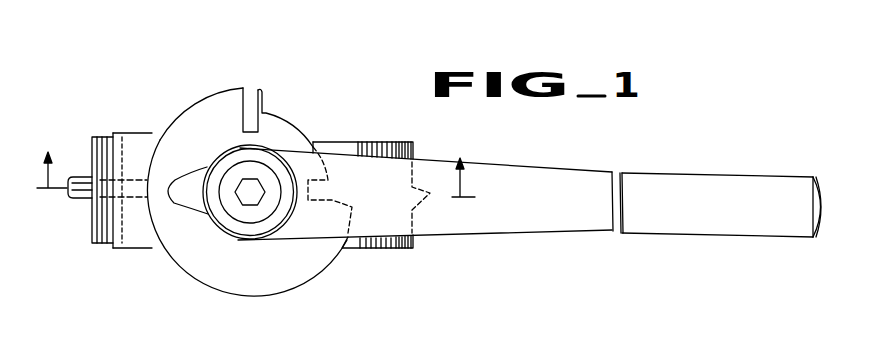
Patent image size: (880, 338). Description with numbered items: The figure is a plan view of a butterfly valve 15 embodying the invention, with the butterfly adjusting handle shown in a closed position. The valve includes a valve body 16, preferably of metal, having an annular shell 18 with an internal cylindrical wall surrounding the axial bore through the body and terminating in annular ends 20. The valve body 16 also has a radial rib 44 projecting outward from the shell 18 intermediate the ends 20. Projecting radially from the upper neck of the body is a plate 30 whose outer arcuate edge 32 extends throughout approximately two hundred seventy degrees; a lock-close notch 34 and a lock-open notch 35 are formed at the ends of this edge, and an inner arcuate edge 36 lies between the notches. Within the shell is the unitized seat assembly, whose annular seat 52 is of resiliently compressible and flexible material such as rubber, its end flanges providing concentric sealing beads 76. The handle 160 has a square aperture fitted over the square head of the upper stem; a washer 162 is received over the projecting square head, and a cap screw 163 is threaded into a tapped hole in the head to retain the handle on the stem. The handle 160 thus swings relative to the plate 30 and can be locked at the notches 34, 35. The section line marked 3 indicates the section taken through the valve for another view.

The butterfly valve 15 is at (165, 72).
The valve body 16 is at (97, 145).
The annular shell 18 is at (405, 254).
The annular ends 20 is at (405, 143).
The plate 30 is at (192, 281).
The outer arcuate edge 32 is at (187, 109).
The lock-close notch 34 is at (330, 198).
The lock-open notch 35 is at (258, 92).
The inner arcuate edge 36 is at (308, 115).
The radial rib 44 is at (90, 200).
The annular seat 52 is at (121, 266).
The sealing beads 76 is at (368, 141).
The handle 160 is at (740, 214).
The washer 162 is at (232, 207).
The cap screw 163 is at (250, 200).
The section line 3- 3 is at (256, 174).